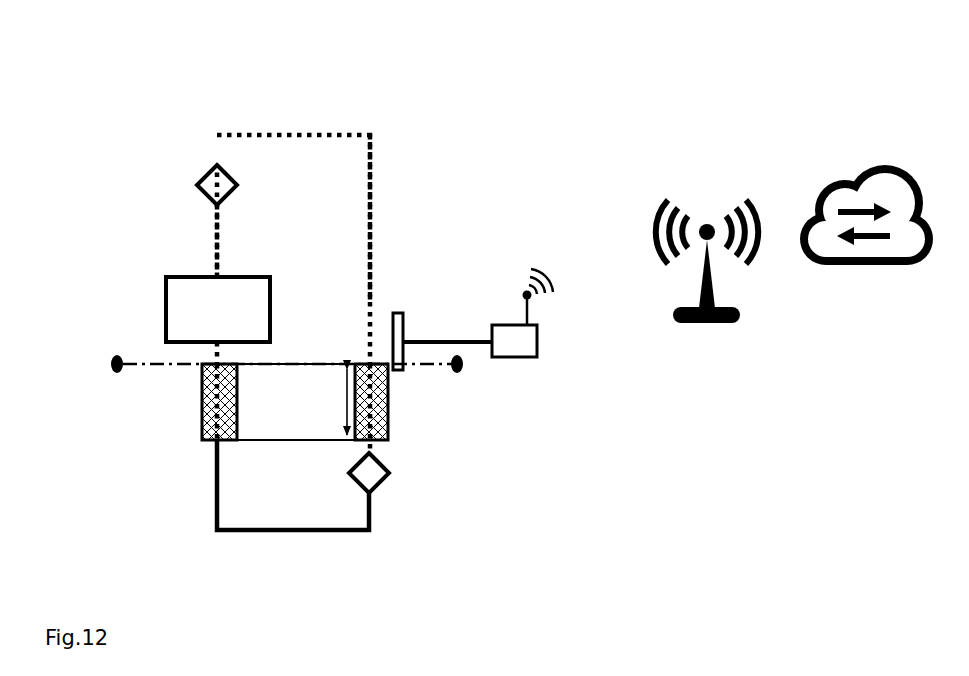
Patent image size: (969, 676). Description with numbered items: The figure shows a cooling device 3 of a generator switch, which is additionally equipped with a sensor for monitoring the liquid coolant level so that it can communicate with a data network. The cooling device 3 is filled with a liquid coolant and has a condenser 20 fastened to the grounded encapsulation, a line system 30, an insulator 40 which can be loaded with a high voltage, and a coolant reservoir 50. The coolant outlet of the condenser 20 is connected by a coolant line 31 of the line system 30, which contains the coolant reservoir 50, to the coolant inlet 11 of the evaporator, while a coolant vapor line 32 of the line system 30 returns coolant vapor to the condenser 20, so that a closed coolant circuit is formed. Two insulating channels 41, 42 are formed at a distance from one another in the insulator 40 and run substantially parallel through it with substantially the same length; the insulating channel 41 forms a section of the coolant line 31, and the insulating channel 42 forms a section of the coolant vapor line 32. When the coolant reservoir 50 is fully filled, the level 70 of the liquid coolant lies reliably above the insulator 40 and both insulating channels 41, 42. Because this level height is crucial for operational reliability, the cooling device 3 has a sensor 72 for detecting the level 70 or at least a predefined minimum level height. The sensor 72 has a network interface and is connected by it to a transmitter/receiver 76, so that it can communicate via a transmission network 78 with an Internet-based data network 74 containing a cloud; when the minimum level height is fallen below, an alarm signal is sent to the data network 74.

The cooling device 3 is at (386, 96).
The coolant inlet 11 is at (373, 478).
The condenser 20 is at (222, 185).
The line system 30 is at (362, 247).
The coolant line 31 is at (211, 253).
The coolant vapor line 32 is at (372, 208).
The insulator 40 is at (295, 402).
The insulating channel 41 is at (202, 410).
The insulating channel 42 is at (374, 408).
The coolant reservoir 50 is at (212, 292).
The level 70 is at (424, 366).
The sensor 72 is at (398, 313).
The data network 74 is at (872, 252).
The transmitter/receiver 76 is at (524, 289).
The transmission network 78 is at (705, 325).